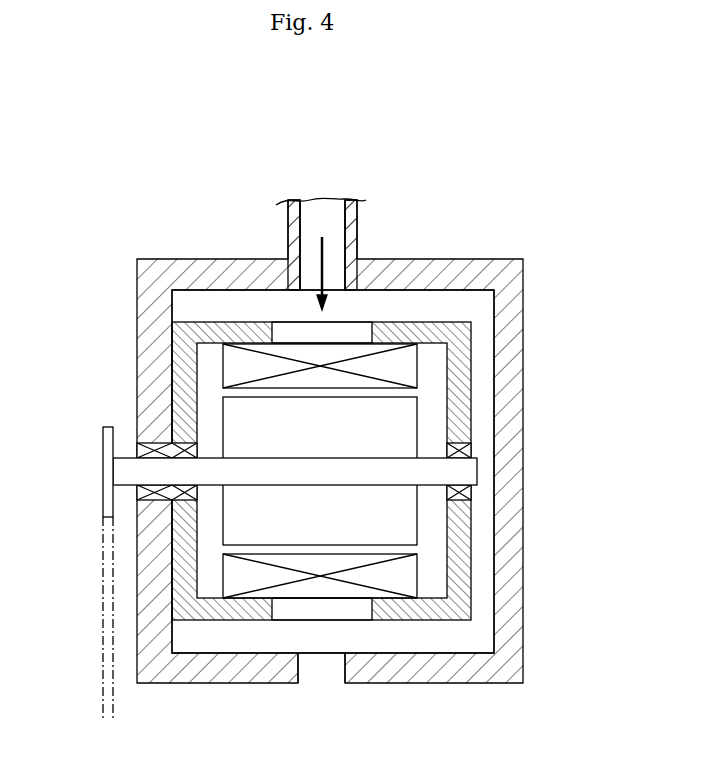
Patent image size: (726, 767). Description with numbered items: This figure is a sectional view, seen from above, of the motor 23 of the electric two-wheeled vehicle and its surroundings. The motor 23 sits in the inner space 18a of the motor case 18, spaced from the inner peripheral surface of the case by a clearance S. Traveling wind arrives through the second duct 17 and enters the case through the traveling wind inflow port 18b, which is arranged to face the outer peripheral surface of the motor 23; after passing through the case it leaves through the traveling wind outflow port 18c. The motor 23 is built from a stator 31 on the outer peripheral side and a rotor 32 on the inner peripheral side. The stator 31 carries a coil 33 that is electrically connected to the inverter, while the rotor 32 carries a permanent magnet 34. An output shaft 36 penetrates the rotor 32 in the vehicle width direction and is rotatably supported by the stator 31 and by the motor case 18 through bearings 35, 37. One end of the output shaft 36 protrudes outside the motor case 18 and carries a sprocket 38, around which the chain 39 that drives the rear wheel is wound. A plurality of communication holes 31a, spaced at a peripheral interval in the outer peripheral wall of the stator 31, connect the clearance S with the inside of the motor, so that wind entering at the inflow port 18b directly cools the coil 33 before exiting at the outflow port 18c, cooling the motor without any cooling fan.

The clearance S is at (227, 298).
The second duct 17 is at (357, 226).
The motor case 18 is at (392, 683).
The inner space 18a is at (182, 307).
The traveling wind inflow port 18b is at (300, 258).
The traveling wind outflow port 18c is at (327, 677).
The motor 23 is at (331, 484).
The stator 31 is at (471, 368).
The communication holes 31a is at (358, 322).
The rotor 32 is at (418, 420).
The coil 33 is at (228, 370).
The permanent magnet 34 is at (240, 422).
The bearing 35 is at (465, 452).
The output shaft 36 is at (470, 471).
The bearing 37 is at (138, 452).
The sprocket 38 is at (103, 497).
The chain 39 is at (103, 652).